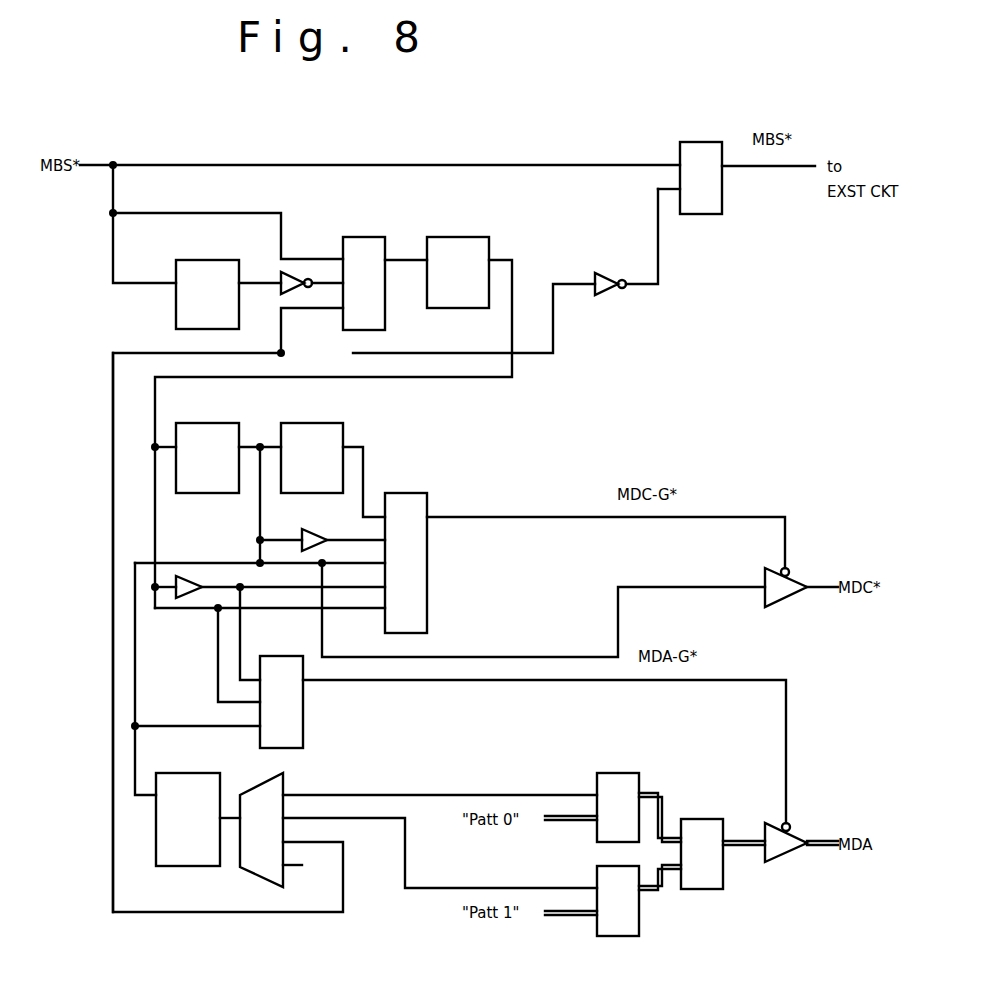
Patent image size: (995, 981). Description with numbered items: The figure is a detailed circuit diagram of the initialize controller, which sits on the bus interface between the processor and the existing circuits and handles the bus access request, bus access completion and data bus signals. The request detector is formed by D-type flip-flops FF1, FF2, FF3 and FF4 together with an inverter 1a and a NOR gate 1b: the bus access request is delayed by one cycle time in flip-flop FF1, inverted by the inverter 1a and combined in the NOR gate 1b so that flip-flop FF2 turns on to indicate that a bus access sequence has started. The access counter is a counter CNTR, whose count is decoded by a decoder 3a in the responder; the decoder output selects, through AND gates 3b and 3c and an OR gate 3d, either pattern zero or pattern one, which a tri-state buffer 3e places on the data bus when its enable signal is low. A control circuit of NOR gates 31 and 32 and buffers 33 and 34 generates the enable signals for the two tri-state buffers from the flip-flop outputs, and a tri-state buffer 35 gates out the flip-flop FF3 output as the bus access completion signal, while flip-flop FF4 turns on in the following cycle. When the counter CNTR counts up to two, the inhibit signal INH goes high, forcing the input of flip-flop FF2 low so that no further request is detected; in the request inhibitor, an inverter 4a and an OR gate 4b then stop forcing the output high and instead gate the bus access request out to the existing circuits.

The flip-flop FF1 is at (197, 260).
The inverter 1a is at (293, 270).
The NOR gate 1b is at (365, 237).
The flip-flop FF2 is at (447, 237).
The inverter 4a is at (598, 310).
The OR gate 4b is at (700, 142).
The inhibit signal INH is at (112, 470).
The flip-flop FF3 is at (197, 423).
The flip-flop FF4 is at (302, 423).
The NOR gate 32 is at (405, 493).
The buffer 33 is at (189, 575).
The buffer 34 is at (315, 528).
The tri-state buffer 35 is at (785, 612).
The NOR gate 31 is at (303, 712).
The counter CNTR is at (178, 866).
The decoder 3a is at (262, 890).
The AND gate 3b is at (618, 773).
The AND gate 3c is at (618, 936).
The OR gate 3d is at (700, 819).
The tri-state buffer 3e is at (785, 868).